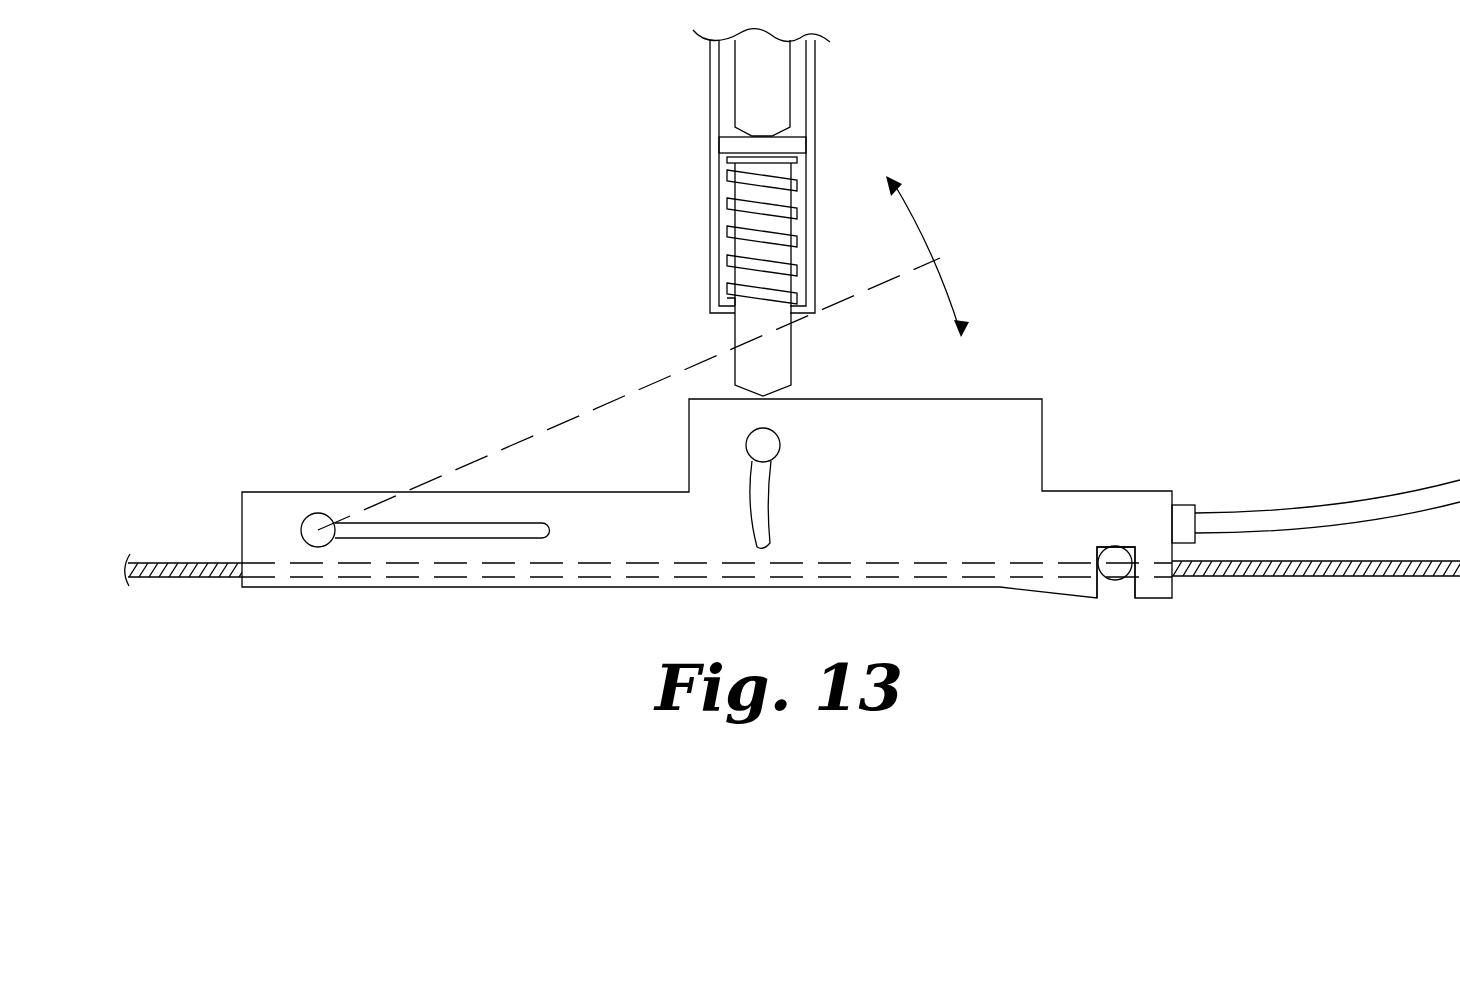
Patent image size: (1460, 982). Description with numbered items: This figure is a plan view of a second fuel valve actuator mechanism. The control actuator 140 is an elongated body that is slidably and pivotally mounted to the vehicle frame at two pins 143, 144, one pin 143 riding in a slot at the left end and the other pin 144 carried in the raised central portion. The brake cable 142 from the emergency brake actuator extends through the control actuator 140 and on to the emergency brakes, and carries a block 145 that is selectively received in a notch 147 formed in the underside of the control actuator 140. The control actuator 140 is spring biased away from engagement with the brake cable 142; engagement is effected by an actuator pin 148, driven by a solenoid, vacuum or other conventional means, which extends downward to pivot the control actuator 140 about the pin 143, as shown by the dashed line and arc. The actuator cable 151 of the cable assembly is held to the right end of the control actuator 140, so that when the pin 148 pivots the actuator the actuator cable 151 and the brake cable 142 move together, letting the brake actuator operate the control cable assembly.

The control actuator 140 is at (1047, 378).
The brake cable 142 is at (1243, 578).
The pin 143 is at (318, 525).
The pin 144 is at (780, 440).
The block 145 is at (1110, 583).
The notch 147 is at (1130, 593).
The actuator pin 148 is at (792, 353).
The actuator cable 151 is at (1263, 513).